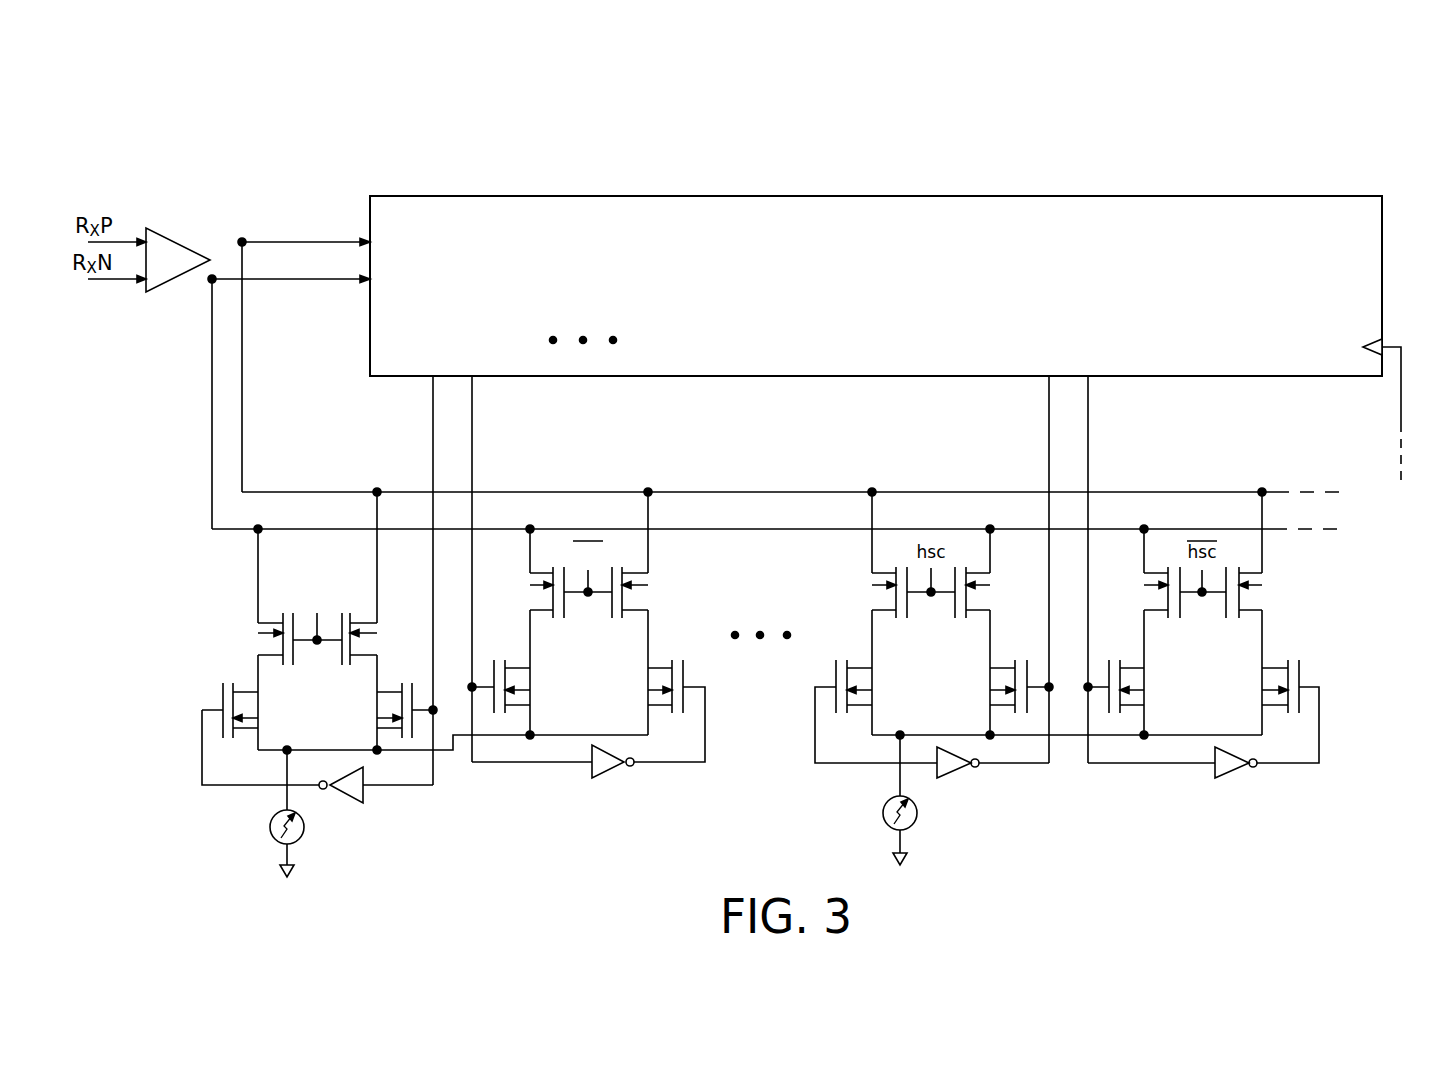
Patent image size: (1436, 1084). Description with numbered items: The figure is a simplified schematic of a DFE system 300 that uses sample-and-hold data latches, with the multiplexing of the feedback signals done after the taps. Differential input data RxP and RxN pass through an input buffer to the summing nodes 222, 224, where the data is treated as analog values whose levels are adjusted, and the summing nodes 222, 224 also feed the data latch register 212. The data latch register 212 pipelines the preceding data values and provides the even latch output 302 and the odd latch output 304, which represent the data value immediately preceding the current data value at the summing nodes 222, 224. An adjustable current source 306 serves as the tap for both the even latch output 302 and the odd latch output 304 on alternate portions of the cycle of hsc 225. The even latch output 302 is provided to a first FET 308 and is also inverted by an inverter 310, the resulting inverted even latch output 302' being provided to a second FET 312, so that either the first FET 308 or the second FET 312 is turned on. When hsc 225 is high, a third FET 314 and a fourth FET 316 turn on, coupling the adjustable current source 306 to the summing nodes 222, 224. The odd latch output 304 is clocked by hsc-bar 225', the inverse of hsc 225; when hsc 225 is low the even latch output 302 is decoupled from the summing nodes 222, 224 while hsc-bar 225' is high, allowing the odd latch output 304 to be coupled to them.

The DFE system 300 is at (1286, 146).
The data latch register 212 is at (933, 196).
The summing node 222 is at (242, 238).
The summing node 224 is at (210, 284).
The hsc 225 is at (863, 477).
The hsc-bar 225' is at (593, 596).
The even_0 data latch output 302 is at (400, 580).
The odd_0 data latch output 304 is at (474, 425).
The inverted even_0 data latch output 302' is at (342, 684).
The adjustable current source 306 is at (305, 827).
The first field-effect transistor 308 is at (412, 682).
The inverter 310 is at (364, 793).
The second FET 312 is at (222, 691).
The third FET 314 is at (294, 666).
The fourth FET 316 is at (341, 666).